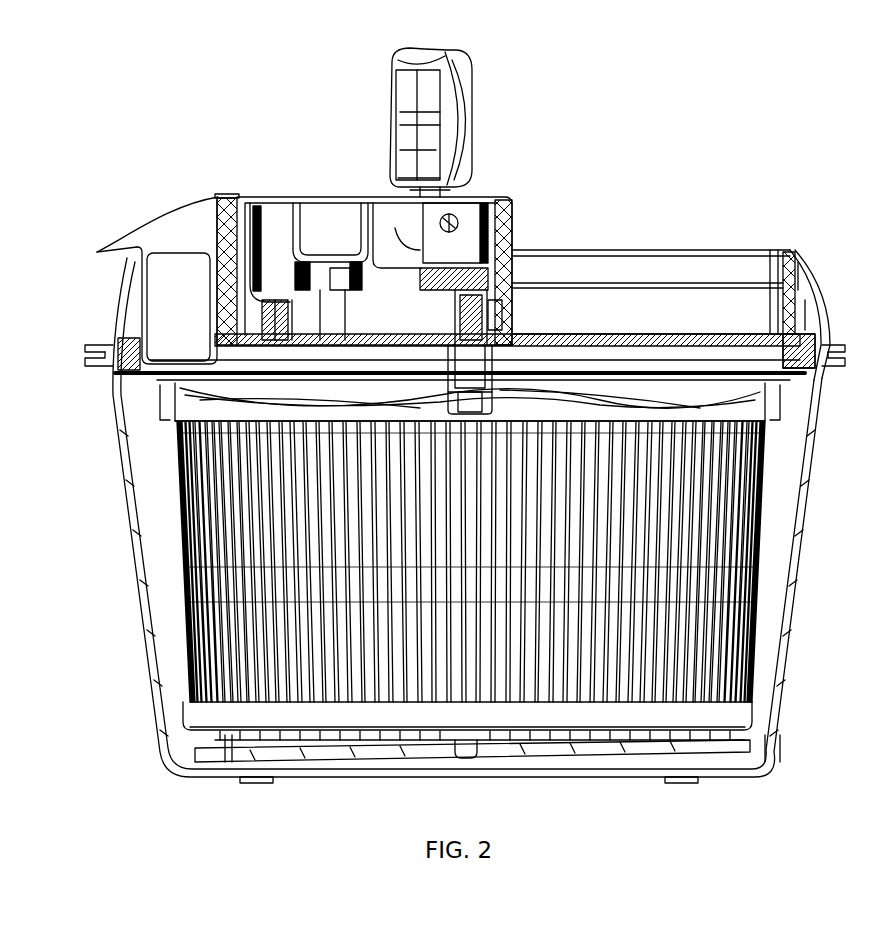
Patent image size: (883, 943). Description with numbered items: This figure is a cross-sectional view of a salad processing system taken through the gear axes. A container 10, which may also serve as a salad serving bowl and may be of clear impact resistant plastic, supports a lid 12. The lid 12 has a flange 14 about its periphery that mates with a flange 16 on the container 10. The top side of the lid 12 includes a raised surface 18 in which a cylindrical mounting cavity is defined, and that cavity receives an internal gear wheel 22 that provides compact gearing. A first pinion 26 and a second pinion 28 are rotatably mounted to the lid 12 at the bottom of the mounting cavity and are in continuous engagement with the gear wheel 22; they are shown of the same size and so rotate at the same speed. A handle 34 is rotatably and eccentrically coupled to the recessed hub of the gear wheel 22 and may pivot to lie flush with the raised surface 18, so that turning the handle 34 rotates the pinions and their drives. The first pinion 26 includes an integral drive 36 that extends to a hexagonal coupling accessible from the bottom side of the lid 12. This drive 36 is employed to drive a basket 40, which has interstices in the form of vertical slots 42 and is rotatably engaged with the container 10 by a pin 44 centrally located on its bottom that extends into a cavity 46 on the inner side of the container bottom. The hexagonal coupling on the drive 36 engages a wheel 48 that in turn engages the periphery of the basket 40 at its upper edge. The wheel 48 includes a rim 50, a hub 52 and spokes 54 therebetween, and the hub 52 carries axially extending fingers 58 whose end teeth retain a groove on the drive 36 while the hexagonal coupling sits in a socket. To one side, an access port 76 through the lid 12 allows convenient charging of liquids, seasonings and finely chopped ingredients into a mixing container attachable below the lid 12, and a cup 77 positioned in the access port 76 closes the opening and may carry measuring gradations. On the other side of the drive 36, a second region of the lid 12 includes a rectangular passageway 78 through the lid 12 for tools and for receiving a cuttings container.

The container 10 is at (130, 492).
The lid 12 is at (797, 251).
The flange 14 is at (95, 343).
The flange 16 is at (100, 367).
The raised surface 18 is at (224, 197).
The gear wheel 22 is at (268, 197).
The first pinion 26 is at (483, 272).
The second pinion 28 is at (303, 262).
The handle 34 is at (470, 97).
The drive 36 is at (478, 343).
The basket 40 is at (178, 548).
The vertical slots 42 is at (432, 690).
The pin 44 is at (470, 755).
The cavity 46 is at (465, 757).
The wheel 48 is at (786, 378).
The rim 50 is at (767, 402).
The hub 52 is at (477, 368).
The spokes 54 is at (250, 397).
The axially extending fingers 58 is at (490, 400).
The access port 76 is at (144, 290).
The cup 77 is at (128, 234).
The rectangular passageway 78 is at (617, 297).